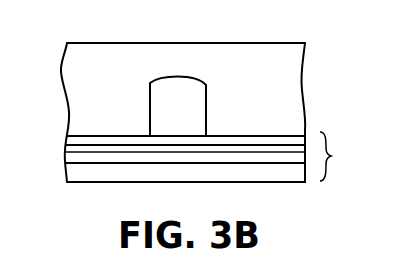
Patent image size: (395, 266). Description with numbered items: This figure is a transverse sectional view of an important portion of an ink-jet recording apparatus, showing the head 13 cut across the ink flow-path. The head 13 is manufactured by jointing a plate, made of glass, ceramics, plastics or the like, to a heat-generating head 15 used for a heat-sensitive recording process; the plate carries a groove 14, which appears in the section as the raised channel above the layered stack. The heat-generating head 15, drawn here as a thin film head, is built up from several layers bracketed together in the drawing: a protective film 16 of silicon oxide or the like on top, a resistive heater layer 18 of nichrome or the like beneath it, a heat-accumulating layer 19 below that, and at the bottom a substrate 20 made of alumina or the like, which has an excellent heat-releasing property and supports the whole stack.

The head 13 is at (93, 43).
The groove 14 is at (195, 74).
The heat-generating head 15 is at (337, 156).
The protective film 16 is at (233, 141).
The resistive heater layer 18 is at (261, 148).
The heat-accumulating layer 19 is at (281, 157).
The substrate 20 is at (100, 172).